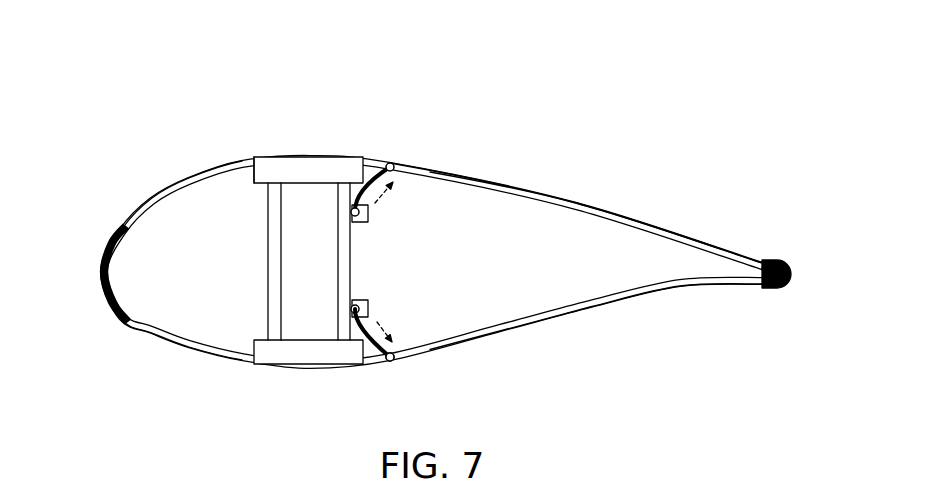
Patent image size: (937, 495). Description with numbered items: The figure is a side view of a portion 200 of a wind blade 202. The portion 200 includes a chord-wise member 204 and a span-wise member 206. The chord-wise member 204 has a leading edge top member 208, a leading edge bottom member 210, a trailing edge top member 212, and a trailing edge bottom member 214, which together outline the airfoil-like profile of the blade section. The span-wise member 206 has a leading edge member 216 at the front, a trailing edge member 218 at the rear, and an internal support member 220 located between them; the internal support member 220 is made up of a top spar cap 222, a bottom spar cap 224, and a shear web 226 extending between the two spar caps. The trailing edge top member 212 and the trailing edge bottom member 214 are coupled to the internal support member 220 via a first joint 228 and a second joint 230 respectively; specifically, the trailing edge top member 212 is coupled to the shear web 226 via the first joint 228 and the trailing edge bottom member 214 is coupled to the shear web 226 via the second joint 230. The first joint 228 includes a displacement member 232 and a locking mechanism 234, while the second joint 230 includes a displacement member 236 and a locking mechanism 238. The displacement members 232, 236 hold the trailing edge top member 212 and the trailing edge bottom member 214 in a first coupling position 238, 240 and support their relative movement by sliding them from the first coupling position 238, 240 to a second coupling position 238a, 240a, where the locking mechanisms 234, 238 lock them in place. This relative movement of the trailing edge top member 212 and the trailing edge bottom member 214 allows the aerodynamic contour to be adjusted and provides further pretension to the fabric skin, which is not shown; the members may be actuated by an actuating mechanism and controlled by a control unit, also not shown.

The portion of a wind blade 200 is at (430, 224).
The wind blade 202 is at (184, 370).
The chord-wise member 204 is at (501, 164).
The span-wise member 206 is at (282, 237).
The leading edge top member 208 is at (150, 200).
The leading edge bottom member 210 is at (152, 344).
The trailing edge top member 212 is at (604, 204).
The trailing edge bottom member 214 is at (624, 306).
The leading edge member 216 is at (99, 270).
The trailing edge member 218 is at (778, 262).
The internal support member 220 is at (256, 151).
The top spar cap 222 is at (280, 157).
The bottom spar cap 224 is at (265, 365).
The shear web 226 is at (283, 297).
The first joint 228 is at (423, 234).
The second joint 230 is at (419, 346).
The displacement member 232 is at (373, 165).
The locking mechanism 234 is at (388, 162).
The displacement member 236 is at (372, 362).
The locking mechanism / first coupling position 238 is at (358, 224).
The second coupling position 238a is at (393, 173).
The first coupling position 240 is at (357, 302).
The second coupling position 240a is at (393, 340).